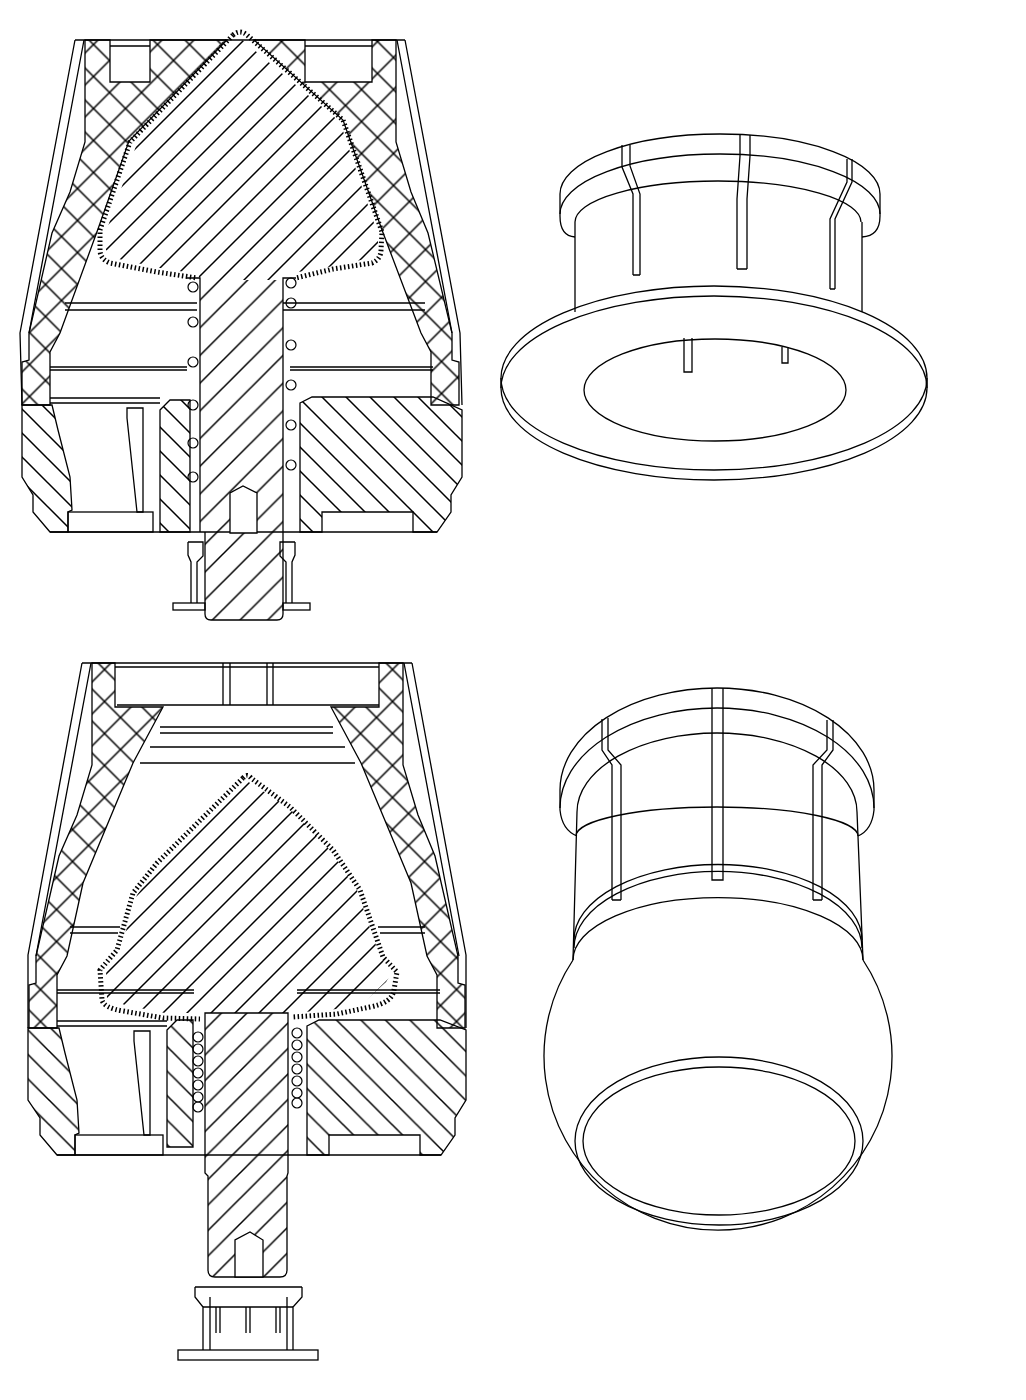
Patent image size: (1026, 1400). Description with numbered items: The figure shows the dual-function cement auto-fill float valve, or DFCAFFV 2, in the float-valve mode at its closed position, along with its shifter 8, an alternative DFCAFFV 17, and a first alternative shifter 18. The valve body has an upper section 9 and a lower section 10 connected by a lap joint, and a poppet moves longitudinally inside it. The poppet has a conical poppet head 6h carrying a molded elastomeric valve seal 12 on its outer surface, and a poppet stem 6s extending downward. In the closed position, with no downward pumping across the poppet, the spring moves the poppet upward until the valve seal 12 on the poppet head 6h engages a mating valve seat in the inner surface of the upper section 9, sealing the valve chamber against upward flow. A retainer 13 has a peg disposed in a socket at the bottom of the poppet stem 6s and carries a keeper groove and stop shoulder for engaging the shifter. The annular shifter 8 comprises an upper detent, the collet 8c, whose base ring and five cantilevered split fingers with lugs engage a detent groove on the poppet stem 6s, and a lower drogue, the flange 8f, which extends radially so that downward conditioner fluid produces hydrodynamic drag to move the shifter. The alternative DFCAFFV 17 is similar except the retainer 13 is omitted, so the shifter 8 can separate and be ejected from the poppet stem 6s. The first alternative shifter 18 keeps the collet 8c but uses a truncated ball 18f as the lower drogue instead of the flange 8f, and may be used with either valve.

In FIG. 4A, the DFCAFFV 2 is at (58, 43).
In FIG. 4A, the poppet head portion 6h is at (205, 93).
In FIG. 4C, the poppet head portion 6h is at (249, 897).
In FIG. 4A, the poppet stem portion 6s is at (200, 345).
In FIG. 4C, the poppet stem portion 6s is at (205, 1213).
In FIG. 4B, the shifter 8 is at (548, 75).
In FIG. 4C, the shifter 8 is at (200, 1322).
In FIG. 4A, the collet 8c is at (193, 547).
In FIG. 4B, the collet 8c is at (678, 142).
In FIG. 4D, the collet 8c is at (657, 703).
In FIG. 4A, the flange 8f is at (180, 608).
In FIG. 4B, the flange 8f is at (547, 405).
In FIG. 4A, the upper section 9 is at (82, 143).
In FIG. 4C, the upper section 9 is at (247, 845).
In FIG. 4A, the lower section 10 is at (38, 482).
In FIG. 4C, the lower section 10 is at (247, 1072).
In FIG. 4A, the valve seal 12 is at (247, 34).
In FIG. 4C, the valve seal 12 is at (248, 898).
In FIG. 4A, the retainer 13 is at (248, 620).
In FIG. 4C, the alternative DFCAFFV 17 is at (71, 646).
In FIG. 4D, the first alternative shifter 18 is at (545, 712).
In FIG. 4D, the truncated ball 18f is at (557, 1117).